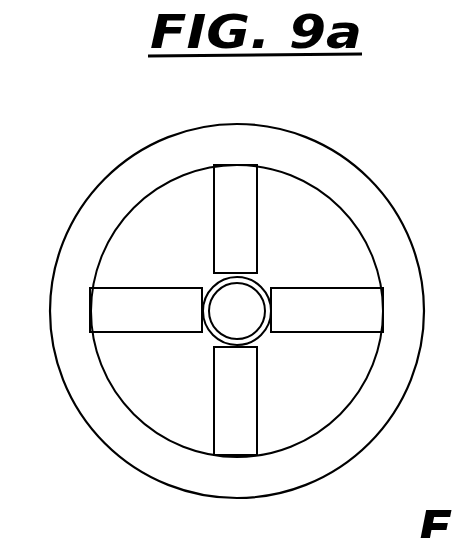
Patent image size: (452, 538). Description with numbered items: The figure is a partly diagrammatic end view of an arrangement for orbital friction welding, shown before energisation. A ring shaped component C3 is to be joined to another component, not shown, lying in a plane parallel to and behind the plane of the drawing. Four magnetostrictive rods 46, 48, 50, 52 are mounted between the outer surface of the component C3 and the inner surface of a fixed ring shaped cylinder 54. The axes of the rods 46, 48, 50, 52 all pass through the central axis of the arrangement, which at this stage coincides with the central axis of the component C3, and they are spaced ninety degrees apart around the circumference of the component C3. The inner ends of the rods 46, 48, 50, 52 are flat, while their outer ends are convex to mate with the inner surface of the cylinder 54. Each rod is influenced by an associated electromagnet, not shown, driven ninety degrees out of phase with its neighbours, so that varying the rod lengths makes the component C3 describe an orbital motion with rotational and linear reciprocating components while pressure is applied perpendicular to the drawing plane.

The magnetostrictive rod 46 is at (118, 317).
The magnetostrictive rod 48 is at (233, 172).
The magnetostrictive rod 50 is at (350, 300).
The magnetostrictive rod 52 is at (233, 427).
The fixed ring shaped cylinder 54 is at (275, 477).
The ring shaped component C3 is at (212, 285).